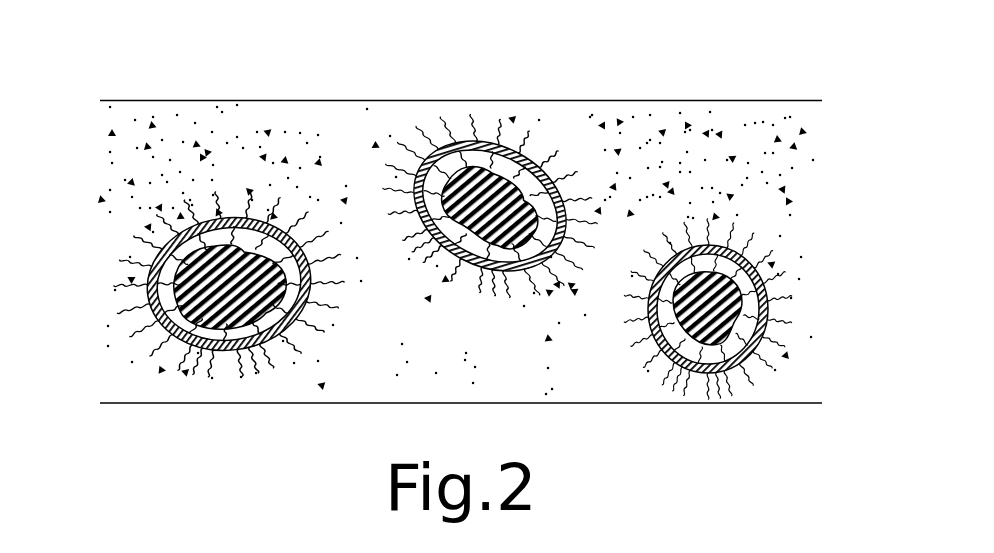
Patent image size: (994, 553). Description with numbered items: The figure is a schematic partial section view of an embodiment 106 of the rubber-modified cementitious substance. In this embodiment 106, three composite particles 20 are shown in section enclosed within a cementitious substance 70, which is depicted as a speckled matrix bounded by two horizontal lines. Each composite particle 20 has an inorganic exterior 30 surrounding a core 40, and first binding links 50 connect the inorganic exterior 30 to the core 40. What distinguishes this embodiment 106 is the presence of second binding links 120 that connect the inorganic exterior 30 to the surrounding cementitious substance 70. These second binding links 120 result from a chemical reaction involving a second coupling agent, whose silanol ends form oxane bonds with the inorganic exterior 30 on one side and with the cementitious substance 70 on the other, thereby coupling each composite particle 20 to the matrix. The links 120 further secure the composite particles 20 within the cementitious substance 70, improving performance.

The embodiment of the rubber-modified cementitious substance 106 is at (820, 72).
The cementitious substance 70 is at (167, 128).
The composite particle 20 is at (523, 147).
The inorganic exterior 30 is at (455, 145).
The core 40 is at (548, 168).
The first binding links 50 is at (233, 220).
The second binding links 120 is at (258, 353).